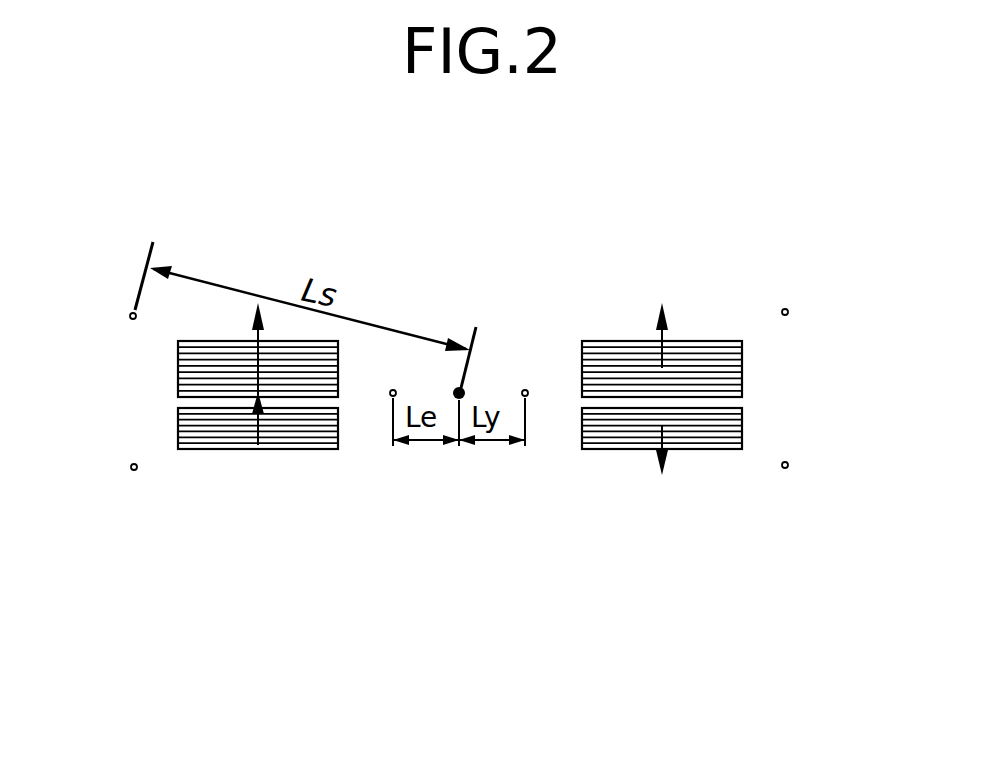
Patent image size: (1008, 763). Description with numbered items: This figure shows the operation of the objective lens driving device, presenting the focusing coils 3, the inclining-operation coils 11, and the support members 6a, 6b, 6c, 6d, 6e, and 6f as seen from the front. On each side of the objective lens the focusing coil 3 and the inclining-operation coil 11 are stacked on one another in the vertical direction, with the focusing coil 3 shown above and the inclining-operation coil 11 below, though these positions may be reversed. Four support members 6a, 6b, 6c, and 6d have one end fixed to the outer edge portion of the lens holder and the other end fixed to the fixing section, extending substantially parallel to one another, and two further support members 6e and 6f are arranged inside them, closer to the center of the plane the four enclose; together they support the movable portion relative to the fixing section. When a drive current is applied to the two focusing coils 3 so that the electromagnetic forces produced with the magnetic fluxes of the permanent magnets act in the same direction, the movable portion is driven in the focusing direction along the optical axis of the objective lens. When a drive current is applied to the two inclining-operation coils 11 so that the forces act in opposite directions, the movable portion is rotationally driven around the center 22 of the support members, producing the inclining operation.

The focusing coil 3 is at (197, 372).
The inclining-operation coil 11 is at (197, 433).
The support member 6a is at (130, 314).
The support member 6b is at (131, 470).
The support member 6c is at (788, 468).
The support member 6d is at (789, 311).
The support member 6e is at (390, 396).
The support member 6f is at (528, 396).
The center of the support members 22 is at (466, 392).